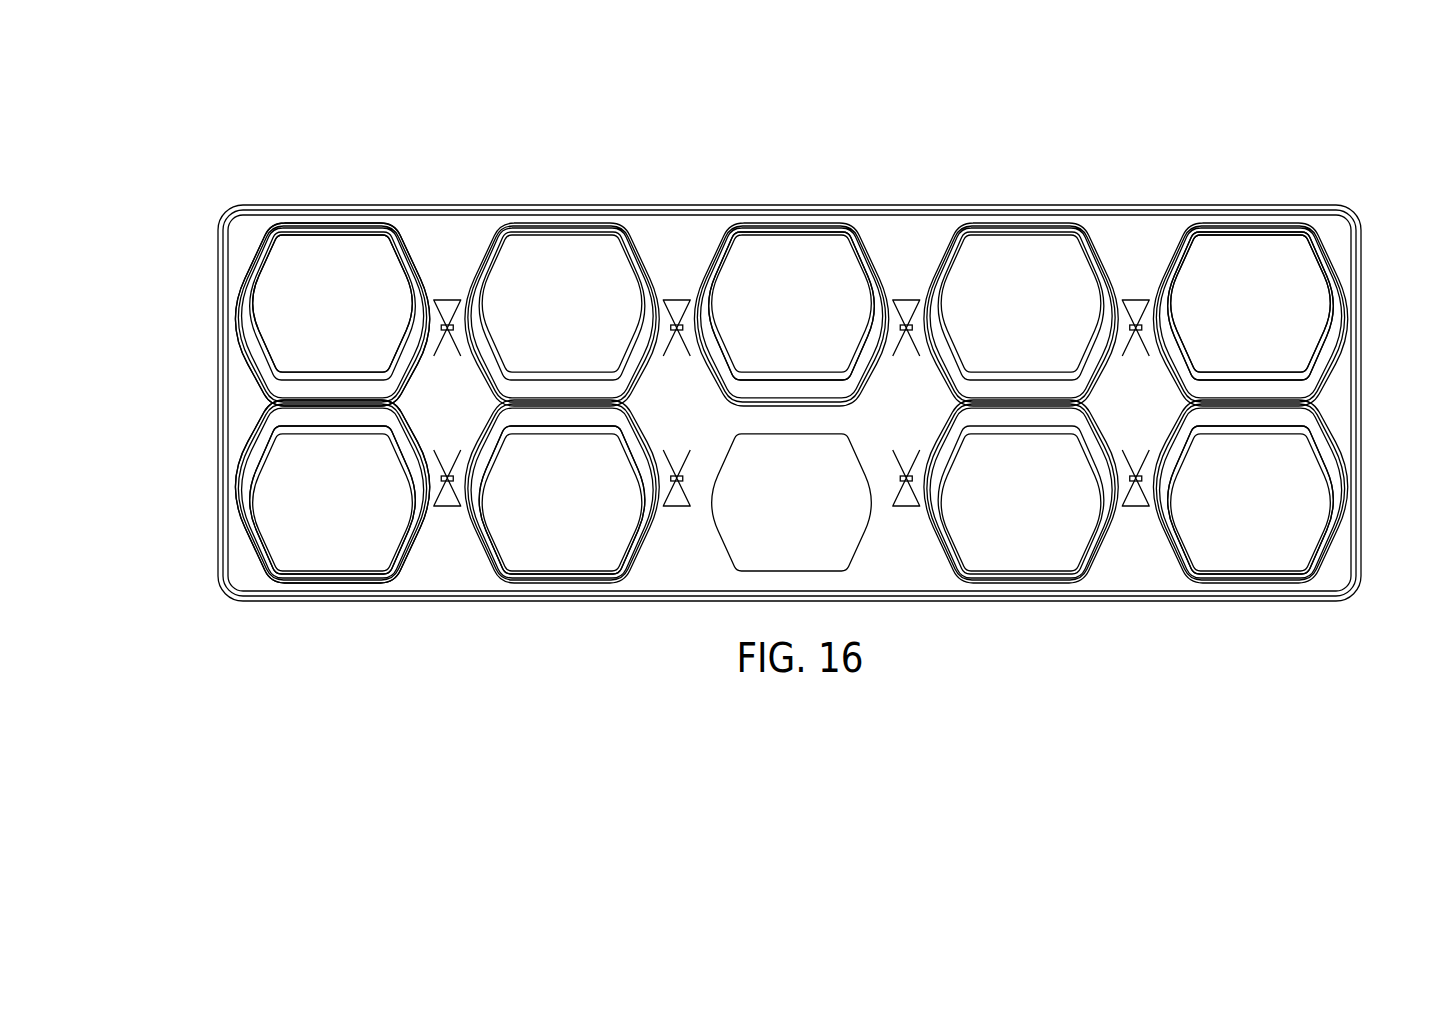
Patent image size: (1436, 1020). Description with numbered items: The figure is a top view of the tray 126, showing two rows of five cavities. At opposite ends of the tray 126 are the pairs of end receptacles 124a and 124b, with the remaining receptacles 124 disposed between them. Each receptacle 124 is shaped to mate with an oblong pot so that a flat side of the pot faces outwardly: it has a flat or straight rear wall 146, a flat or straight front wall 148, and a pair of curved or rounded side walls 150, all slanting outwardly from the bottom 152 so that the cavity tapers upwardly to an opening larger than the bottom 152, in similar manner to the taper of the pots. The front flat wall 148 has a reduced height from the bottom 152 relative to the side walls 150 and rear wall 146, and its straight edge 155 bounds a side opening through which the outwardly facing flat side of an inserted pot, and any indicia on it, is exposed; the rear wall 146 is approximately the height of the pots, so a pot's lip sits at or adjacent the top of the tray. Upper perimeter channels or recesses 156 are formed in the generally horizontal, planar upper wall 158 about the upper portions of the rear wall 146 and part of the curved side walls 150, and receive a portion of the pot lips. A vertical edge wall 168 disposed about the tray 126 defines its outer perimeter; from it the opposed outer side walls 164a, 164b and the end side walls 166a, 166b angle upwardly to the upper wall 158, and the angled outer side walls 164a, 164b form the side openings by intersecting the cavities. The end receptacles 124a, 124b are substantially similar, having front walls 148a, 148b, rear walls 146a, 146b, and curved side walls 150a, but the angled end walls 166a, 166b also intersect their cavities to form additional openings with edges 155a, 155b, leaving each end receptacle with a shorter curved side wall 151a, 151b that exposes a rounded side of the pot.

The tray 126 is at (203, 143).
The receptacle 124 is at (822, 252).
The end receptacle 124a is at (1300, 265).
The end receptacle 124b is at (258, 290).
The bottom 152 is at (317, 317).
The upper wall 158 is at (660, 415).
The straight edge 155 is at (588, 225).
The edge 155a is at (350, 585).
The edge 155b is at (332, 231).
The front flat wall 148 is at (758, 232).
The front wall 148a is at (1258, 240).
The front wall 148b is at (1253, 563).
The rear flat wall 146 is at (795, 390).
The rear wall 146a is at (330, 420).
The rear wall 146b is at (1272, 423).
The curved side wall 150 is at (462, 333).
The curved side wall 150a is at (436, 481).
The upper perimeter channel 156 is at (543, 398).
The outer side wall 164a is at (680, 555).
The outer side wall 164b is at (680, 230).
The end side wall 166a is at (1340, 405).
The end side wall 166b is at (250, 405).
The vertical edge wall 168 is at (1365, 310).
The shorter curved side wall 151a is at (258, 527).
The shorter curved side wall 151b is at (254, 332).